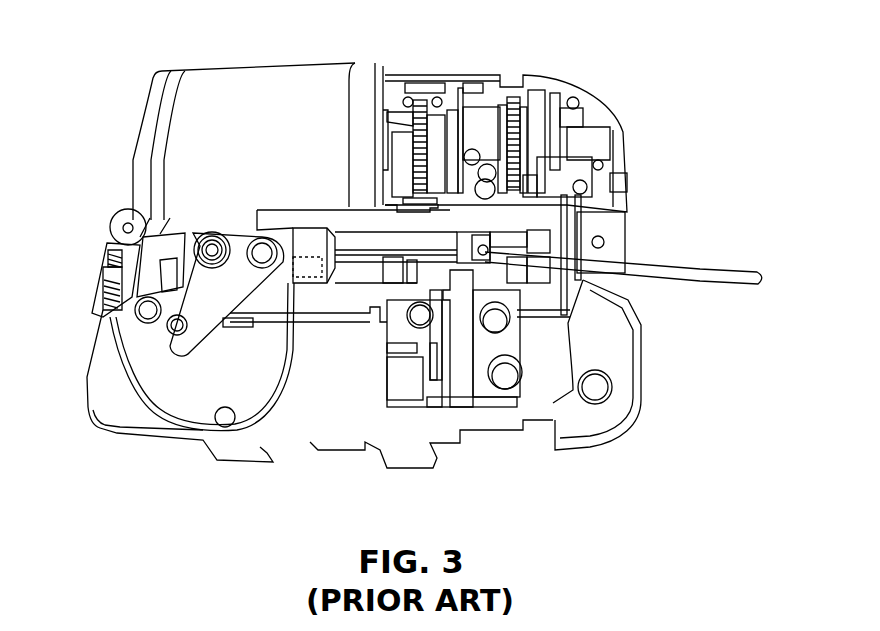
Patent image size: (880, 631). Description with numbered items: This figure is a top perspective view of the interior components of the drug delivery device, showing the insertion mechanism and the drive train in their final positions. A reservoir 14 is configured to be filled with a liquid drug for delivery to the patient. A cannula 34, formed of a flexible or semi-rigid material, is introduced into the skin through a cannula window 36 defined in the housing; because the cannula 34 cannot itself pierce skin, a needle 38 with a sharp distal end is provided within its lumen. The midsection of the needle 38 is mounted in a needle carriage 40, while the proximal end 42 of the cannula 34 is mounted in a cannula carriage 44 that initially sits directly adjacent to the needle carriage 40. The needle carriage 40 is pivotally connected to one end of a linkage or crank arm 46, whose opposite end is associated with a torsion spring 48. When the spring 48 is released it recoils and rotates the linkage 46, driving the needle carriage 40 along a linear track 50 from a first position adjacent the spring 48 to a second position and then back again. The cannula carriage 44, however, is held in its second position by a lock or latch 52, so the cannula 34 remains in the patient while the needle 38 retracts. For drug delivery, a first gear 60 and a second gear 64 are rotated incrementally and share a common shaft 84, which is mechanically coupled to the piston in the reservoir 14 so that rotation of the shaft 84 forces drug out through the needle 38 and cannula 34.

The reservoir 14 is at (223, 102).
The needle carriage 40 is at (298, 222).
The first gear 60 is at (423, 104).
The shaft 84 is at (482, 140).
The second gear 64 is at (513, 104).
The torsion spring 48 is at (205, 238).
The linkage or crank arm 46 is at (183, 283).
The cannula carriage 44 is at (497, 234).
The cannula 34 is at (723, 280).
The cannula window 36 is at (625, 311).
The needle 38 is at (276, 400).
The linear track 50 is at (428, 285).
The lock or latch 52 is at (455, 372).
The proximal end of the cannula 42 is at (483, 256).